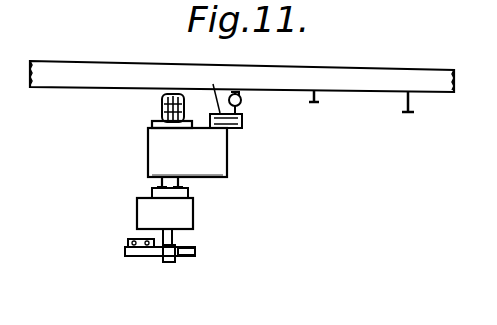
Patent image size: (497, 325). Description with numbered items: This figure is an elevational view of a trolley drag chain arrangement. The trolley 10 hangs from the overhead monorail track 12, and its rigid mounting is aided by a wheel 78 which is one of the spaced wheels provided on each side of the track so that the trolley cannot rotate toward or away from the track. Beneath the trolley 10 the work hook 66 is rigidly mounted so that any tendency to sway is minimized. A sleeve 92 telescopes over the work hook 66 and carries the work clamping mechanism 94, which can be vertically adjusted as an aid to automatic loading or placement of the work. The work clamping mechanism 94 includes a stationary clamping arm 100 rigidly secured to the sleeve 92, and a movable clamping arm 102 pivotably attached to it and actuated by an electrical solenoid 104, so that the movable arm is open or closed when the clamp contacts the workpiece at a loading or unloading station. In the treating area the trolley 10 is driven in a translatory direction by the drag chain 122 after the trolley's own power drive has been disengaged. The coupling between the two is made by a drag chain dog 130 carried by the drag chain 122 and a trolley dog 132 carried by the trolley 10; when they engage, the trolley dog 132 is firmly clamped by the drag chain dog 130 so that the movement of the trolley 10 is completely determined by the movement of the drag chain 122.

The trolley 10 is at (217, 149).
The monorail track 12 is at (410, 100).
The work hook 66 is at (190, 191).
The wheel 78 is at (162, 104).
The sleeve 92 is at (176, 243).
The work clamping mechanism 94 is at (176, 272).
The stationary clamping arm 100 is at (188, 256).
The movable clamping arm 102 is at (136, 251).
The electrical solenoid 104 is at (146, 244).
The drag chain 122 is at (246, 104).
The drag chain dog 130 is at (213, 89).
The trolley dog 132 is at (187, 160).